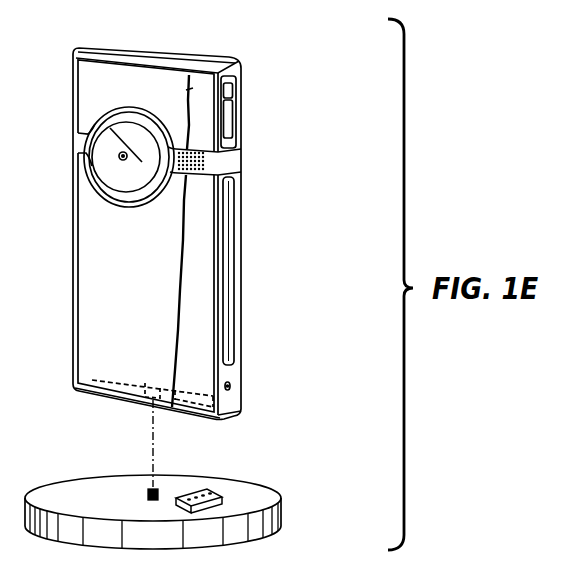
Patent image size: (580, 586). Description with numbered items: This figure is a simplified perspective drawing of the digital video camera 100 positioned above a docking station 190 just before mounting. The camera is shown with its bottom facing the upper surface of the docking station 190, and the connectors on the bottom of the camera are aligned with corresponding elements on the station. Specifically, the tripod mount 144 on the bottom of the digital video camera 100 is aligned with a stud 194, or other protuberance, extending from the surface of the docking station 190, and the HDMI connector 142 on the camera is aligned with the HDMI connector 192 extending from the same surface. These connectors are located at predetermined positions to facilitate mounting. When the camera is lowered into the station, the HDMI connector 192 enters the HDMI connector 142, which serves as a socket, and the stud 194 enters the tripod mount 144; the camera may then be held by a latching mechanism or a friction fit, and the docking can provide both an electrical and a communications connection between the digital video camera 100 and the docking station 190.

The digital video camera 100 is at (172, 56).
The HDMI connector 142 is at (205, 421).
The tripod mount 144 is at (147, 406).
The docking station 190 is at (283, 519).
The HDMI connector 192 is at (222, 492).
The stud 194 is at (148, 488).